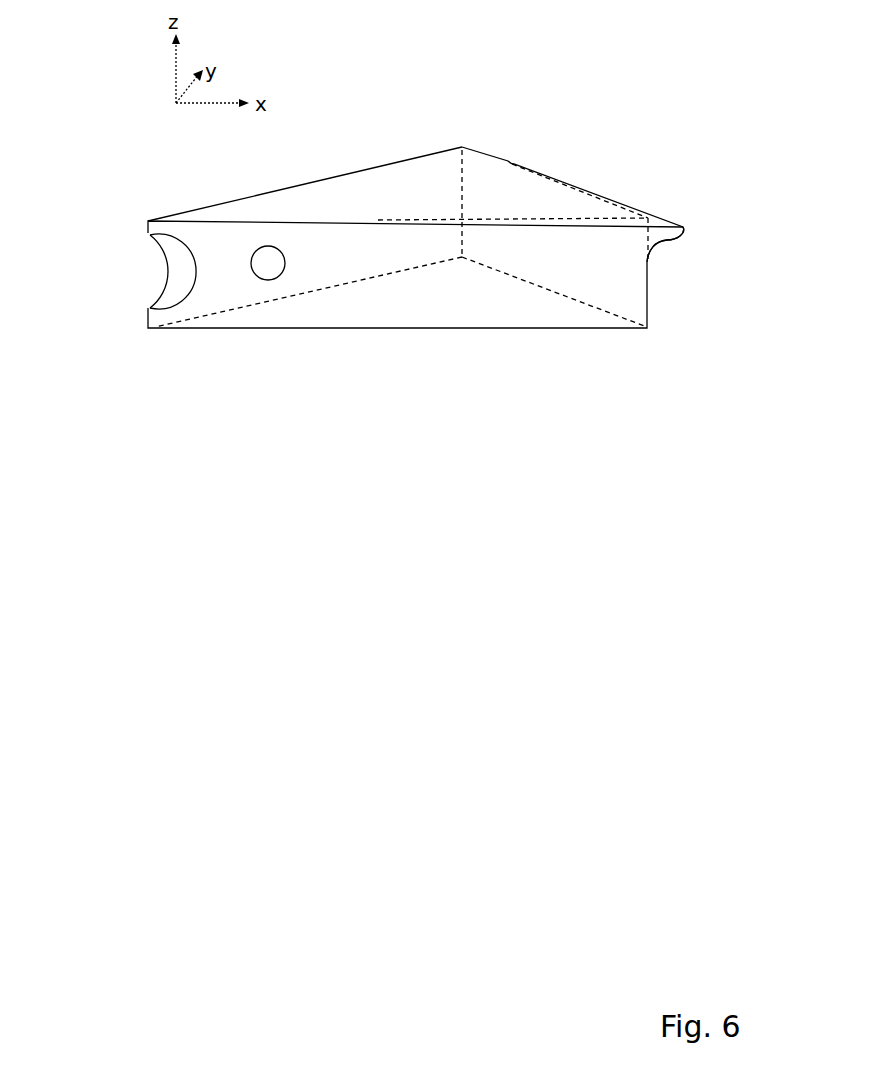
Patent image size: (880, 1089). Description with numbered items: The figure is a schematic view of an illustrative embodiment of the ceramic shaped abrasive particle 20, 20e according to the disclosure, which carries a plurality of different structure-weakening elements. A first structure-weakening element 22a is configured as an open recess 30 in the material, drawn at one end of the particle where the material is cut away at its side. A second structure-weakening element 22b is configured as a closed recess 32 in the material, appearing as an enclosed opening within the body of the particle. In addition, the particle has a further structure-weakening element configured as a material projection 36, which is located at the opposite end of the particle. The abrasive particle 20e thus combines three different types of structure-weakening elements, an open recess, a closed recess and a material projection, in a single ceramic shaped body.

The ceramic shaped abrasive particle 20 is at (434, 176).
The ceramic shaped abrasive particle 20e is at (587, 99).
The structure-weakening element 22a is at (114, 262).
The open recess 30 is at (150, 276).
The structure-weakening element 22b is at (243, 328).
The closed recess 32 is at (256, 287).
The material projection 36 is at (660, 219).